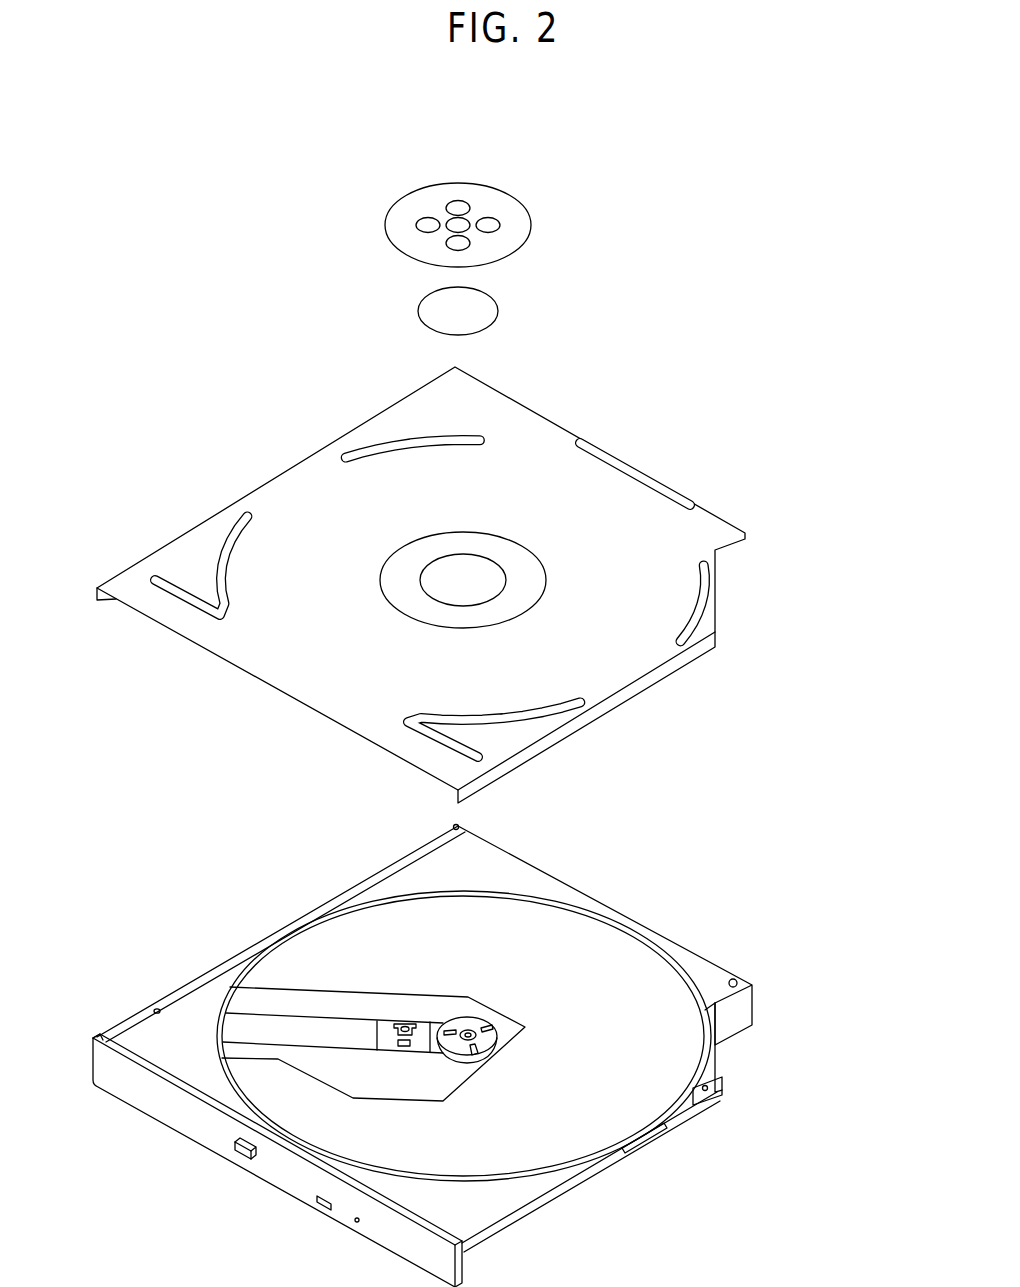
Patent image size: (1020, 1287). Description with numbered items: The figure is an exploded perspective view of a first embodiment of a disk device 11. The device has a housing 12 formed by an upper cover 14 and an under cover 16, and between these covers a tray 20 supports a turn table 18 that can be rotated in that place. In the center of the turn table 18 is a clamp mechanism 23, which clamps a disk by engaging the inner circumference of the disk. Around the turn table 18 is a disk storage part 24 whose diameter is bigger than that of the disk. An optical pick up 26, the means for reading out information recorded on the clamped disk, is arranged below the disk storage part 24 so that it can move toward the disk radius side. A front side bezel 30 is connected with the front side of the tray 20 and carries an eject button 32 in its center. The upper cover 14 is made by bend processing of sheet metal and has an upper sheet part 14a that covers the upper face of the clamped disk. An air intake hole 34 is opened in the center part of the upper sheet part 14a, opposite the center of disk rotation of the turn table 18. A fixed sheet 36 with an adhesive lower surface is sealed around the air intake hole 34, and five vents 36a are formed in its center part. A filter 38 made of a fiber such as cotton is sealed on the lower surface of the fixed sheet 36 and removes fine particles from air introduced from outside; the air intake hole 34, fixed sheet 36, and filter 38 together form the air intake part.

The disk device 11 is at (330, 176).
The housing 12 is at (758, 770).
The upper cover 14 is at (430, 585).
The upper sheet part 14a is at (543, 432).
The under cover 16 is at (430, 1051).
The turn table 18 is at (493, 1038).
The tray 20 is at (530, 1221).
The clamp mechanism 23 is at (515, 1013).
The disk storage part 24 is at (347, 938).
The optical pick up 26 is at (407, 1022).
The front side bezel 30 is at (183, 1118).
The eject button 32 is at (240, 1157).
The air intake hole 34 is at (478, 567).
The fixed sheet 36 is at (496, 198).
The vents 36a is at (463, 200).
The filter 38 is at (499, 313).